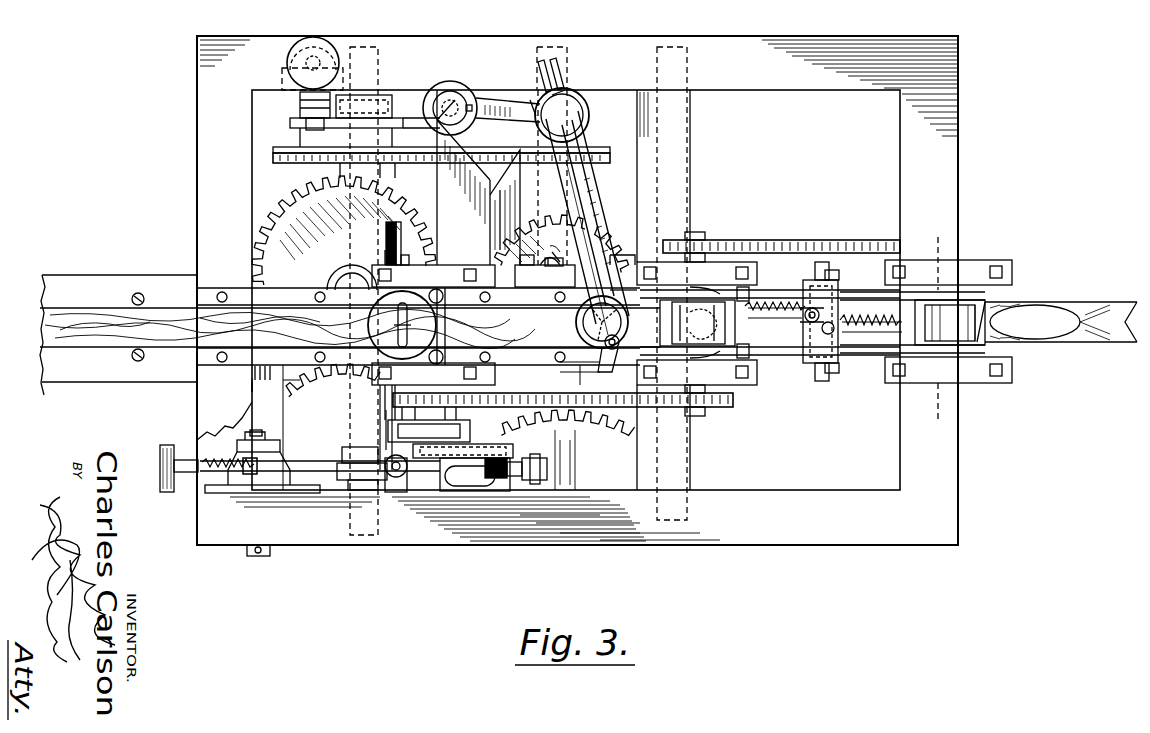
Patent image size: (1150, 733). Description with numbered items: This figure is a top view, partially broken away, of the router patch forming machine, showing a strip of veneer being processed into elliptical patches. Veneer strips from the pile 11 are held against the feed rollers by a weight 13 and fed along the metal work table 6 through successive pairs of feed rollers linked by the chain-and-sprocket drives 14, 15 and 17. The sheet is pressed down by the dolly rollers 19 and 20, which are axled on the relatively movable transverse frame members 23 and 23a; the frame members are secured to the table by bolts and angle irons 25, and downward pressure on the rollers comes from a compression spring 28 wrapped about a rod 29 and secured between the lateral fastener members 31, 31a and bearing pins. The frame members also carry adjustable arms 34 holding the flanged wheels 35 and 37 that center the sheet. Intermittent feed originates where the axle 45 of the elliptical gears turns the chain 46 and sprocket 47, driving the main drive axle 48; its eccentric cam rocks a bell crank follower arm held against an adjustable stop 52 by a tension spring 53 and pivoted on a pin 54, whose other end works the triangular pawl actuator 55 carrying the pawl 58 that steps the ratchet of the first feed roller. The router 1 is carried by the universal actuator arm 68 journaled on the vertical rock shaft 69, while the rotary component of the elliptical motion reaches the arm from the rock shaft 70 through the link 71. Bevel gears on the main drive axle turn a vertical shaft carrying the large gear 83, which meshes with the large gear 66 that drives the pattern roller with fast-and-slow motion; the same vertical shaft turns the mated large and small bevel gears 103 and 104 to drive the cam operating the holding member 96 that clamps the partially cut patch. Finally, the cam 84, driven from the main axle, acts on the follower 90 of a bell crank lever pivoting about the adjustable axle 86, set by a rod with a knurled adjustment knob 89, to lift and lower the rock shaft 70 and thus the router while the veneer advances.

The router 1 is at (628, 281).
The metal work table 6 is at (285, 352).
The pile of veneer strips 11 is at (45, 338).
The weight 13 is at (388, 345).
The chain-and-sprocket drive 14 is at (674, 400).
The chain-and-sprocket drive 15 is at (708, 406).
The chain-and-sprocket drive 17 is at (808, 242).
The dolly roller 19 is at (698, 338).
The dolly roller 20 is at (995, 308).
The transverse frame member 23 is at (760, 292).
The transverse frame member 23a is at (872, 290).
The bolts and angle irons 25 is at (826, 270).
The compression spring 28 is at (872, 325).
The rod 29 is at (812, 306).
The lateral fastener member 31 is at (812, 362).
The lateral fastener member 31a is at (838, 372).
The adjustable arms 34 is at (714, 285).
The flanged wheel 35 is at (630, 374).
The flanged wheel 37 is at (618, 306).
The axle 45 is at (576, 456).
The chain 46 is at (282, 152).
The sprocket 47 is at (345, 170).
The main drive axle 48 is at (378, 406).
The adjustable stop 52 is at (246, 476).
The tension spring 53 is at (408, 468).
The pin 54 is at (246, 552).
The pawl actuator 55 is at (470, 452).
The pawl 58 is at (450, 428).
The large gear 66 is at (530, 222).
The universal actuator arm 68 is at (595, 212).
The vertical rock shaft 69 is at (577, 110).
The rock shaft 70 is at (462, 90).
The link 71 is at (498, 108).
The large gear 83 is at (300, 210).
The cam 84 is at (398, 123).
The axle 86 is at (305, 132).
The knurled adjustment knob 89 is at (318, 42).
The follower 90 is at (305, 460).
The holding member 96 is at (555, 255).
The large bevel gear 103 is at (398, 233).
The small bevel gear 104 is at (360, 265).